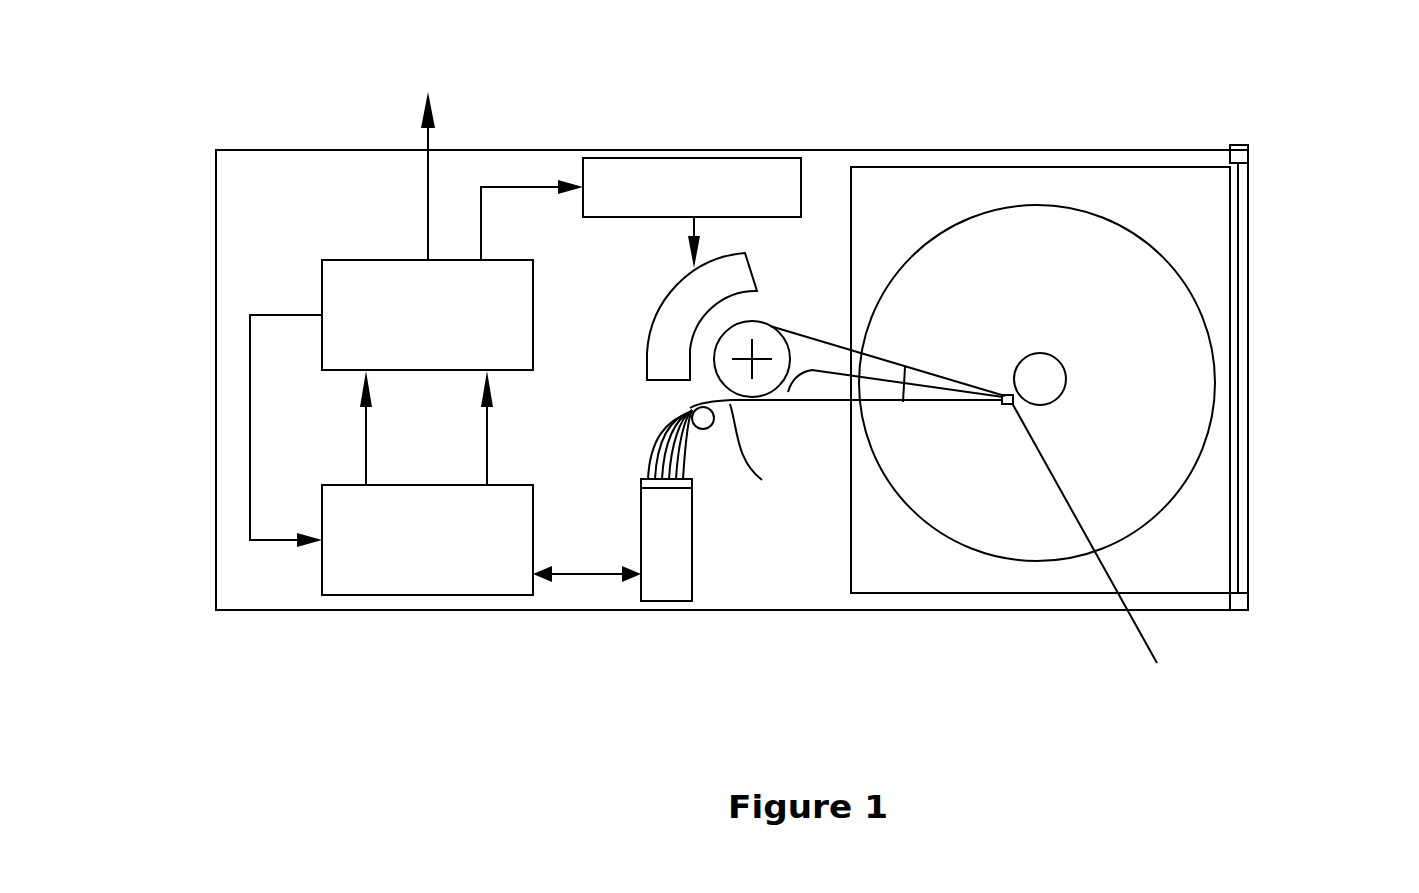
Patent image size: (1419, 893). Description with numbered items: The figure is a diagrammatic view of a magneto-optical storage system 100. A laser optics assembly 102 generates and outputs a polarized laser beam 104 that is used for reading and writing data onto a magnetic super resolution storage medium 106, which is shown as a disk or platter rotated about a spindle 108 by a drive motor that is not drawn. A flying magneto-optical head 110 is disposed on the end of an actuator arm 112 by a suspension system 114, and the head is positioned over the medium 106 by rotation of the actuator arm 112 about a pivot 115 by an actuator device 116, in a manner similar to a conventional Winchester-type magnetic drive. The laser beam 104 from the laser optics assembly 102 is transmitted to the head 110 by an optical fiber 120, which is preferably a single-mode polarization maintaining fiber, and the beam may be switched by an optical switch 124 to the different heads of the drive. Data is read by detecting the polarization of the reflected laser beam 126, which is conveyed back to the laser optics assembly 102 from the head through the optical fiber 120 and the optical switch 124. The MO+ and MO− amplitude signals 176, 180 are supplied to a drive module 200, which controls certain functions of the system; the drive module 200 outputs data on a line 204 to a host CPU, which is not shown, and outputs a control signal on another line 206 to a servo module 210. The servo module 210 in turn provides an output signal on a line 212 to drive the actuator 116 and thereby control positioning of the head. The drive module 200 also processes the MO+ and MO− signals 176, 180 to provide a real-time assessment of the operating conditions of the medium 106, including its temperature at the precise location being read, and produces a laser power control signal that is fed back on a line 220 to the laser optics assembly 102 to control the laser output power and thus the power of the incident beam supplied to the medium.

The magneto-optical storage system 100 is at (1094, 744).
The laser optics assembly 102 is at (402, 590).
The polarized laser beam 104 is at (693, 533).
The magnetic super resolution storage medium 106 is at (1123, 265).
The spindle 108 is at (1048, 372).
The flying magneto-optical head 110 is at (961, 534).
The actuator arm 112 is at (885, 370).
The suspension system 114 is at (935, 385).
The pivot 115 is at (723, 377).
The actuator device 116 is at (670, 292).
The optical fiber 120 is at (683, 460).
The optical switch 124 is at (690, 563).
The reflected laser beam 126 is at (563, 583).
The MO+ signal line 176 is at (366, 442).
The MO- signal line 180 is at (487, 447).
The drive module 200 is at (402, 362).
The data line to host CPU 204 is at (428, 185).
The control signal line 206 is at (481, 187).
The servo module 210 is at (669, 212).
The servo output line 212 is at (697, 226).
The laser power control feedback line 220 is at (250, 463).